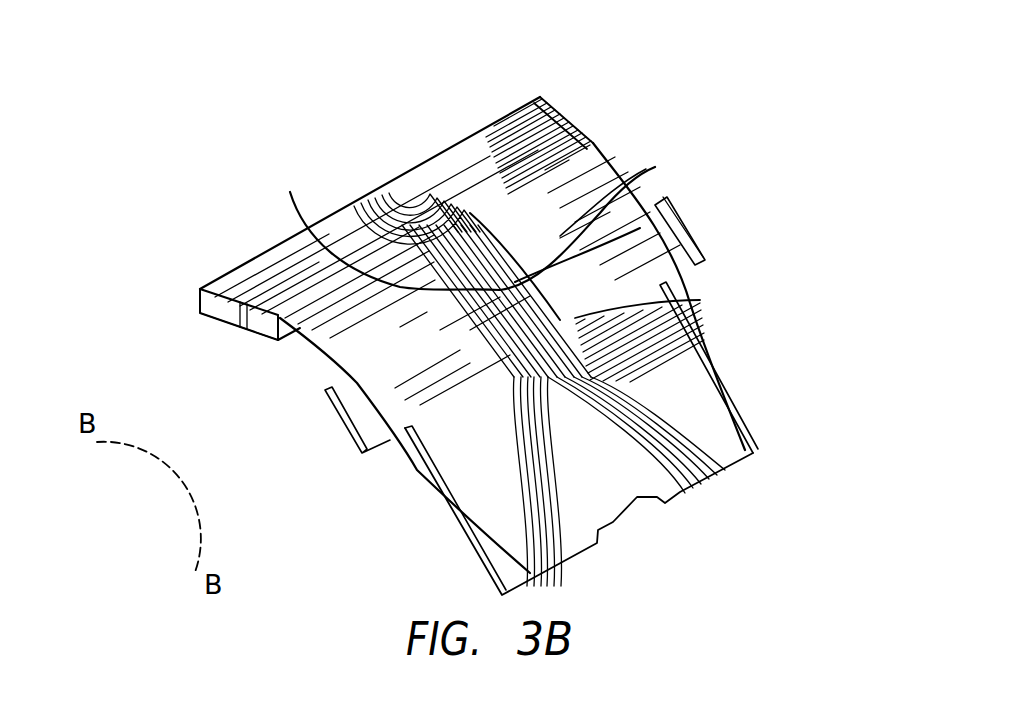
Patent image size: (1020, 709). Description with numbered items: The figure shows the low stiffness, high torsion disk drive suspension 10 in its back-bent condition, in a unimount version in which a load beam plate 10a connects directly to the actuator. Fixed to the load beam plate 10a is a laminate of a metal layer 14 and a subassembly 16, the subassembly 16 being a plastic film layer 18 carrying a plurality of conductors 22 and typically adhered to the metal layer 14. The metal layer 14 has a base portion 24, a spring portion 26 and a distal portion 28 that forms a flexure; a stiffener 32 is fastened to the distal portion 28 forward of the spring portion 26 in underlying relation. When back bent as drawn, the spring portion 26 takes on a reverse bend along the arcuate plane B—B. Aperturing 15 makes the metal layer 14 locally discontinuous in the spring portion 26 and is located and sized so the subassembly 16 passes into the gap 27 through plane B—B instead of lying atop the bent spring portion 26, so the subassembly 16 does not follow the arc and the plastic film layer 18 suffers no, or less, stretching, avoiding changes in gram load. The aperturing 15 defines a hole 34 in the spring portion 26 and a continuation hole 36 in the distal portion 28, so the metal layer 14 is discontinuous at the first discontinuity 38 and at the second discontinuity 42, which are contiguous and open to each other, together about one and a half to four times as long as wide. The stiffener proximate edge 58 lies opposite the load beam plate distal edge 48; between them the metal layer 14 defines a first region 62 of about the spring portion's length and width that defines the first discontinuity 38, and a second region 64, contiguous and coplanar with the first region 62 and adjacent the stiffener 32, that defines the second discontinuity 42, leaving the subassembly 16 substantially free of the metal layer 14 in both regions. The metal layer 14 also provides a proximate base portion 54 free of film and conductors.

The disk drive suspension 10 is at (353, 152).
The load beam plate 10a is at (205, 287).
The metal layer 14 is at (266, 265).
The aperturing 15 is at (513, 256).
The subassembly 16 is at (510, 303).
The plastic film layer 18 is at (497, 255).
The conductors 22 is at (557, 458).
The base portion 24 is at (520, 110).
The spring portion 26 is at (597, 170).
The gap 27 is at (265, 327).
The distal portion 28 is at (693, 403).
The stiffener 32 is at (690, 256).
The hole 34 is at (646, 169).
The continuation hole 36 is at (665, 325).
The first discontinuity 38 is at (465, 228).
The second discontinuity 42 is at (500, 380).
The load beam plate distal edge 48 is at (287, 336).
The base portion 54 is at (251, 318).
The stiffener proximate edge 58 is at (655, 207).
The first region 62 is at (345, 360).
The second region 64 is at (650, 267).